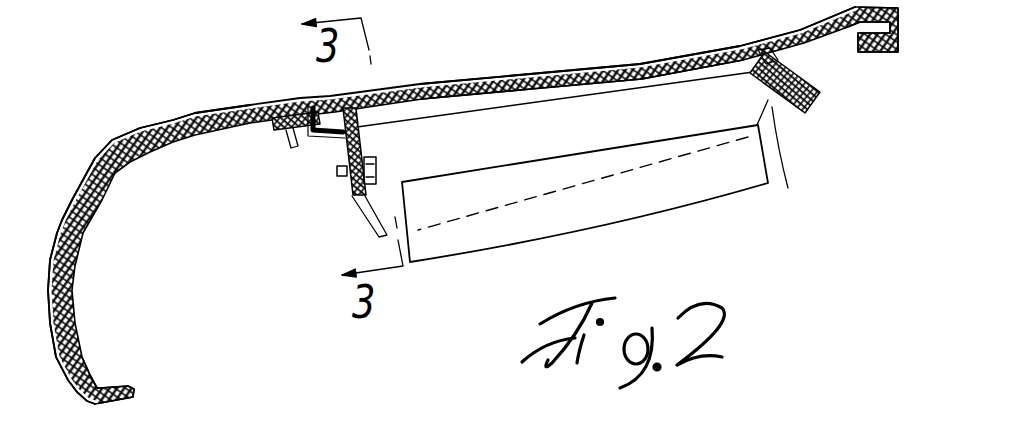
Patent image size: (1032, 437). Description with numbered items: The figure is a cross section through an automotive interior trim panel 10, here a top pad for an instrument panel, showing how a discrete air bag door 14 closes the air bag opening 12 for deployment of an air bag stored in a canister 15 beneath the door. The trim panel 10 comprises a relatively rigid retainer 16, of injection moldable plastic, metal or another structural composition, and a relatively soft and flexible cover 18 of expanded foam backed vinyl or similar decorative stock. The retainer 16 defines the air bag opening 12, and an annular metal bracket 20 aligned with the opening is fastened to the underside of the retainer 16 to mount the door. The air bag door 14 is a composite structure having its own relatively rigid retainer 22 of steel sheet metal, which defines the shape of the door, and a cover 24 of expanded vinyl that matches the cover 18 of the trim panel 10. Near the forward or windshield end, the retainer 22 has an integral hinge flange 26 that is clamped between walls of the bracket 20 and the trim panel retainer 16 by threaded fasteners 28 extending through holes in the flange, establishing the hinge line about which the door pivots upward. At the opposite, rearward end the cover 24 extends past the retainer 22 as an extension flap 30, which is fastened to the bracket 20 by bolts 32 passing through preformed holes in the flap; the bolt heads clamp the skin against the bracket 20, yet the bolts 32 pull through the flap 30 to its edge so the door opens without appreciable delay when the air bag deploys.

The automotive interior trim panel 10 is at (224, 110).
The air bag opening 12 is at (580, 142).
The air bag door 14 is at (652, 58).
The canister 15 is at (670, 200).
The retainer 16 is at (72, 335).
The cover 18 is at (130, 150).
The annular metal bracket 20 is at (360, 222).
The retainer 22 is at (473, 147).
The cover 24 is at (567, 72).
The hinge flange 26 is at (758, 70).
The threaded fasteners 28 is at (800, 159).
The extension flap 30 is at (357, 130).
The bolts 32 is at (340, 176).